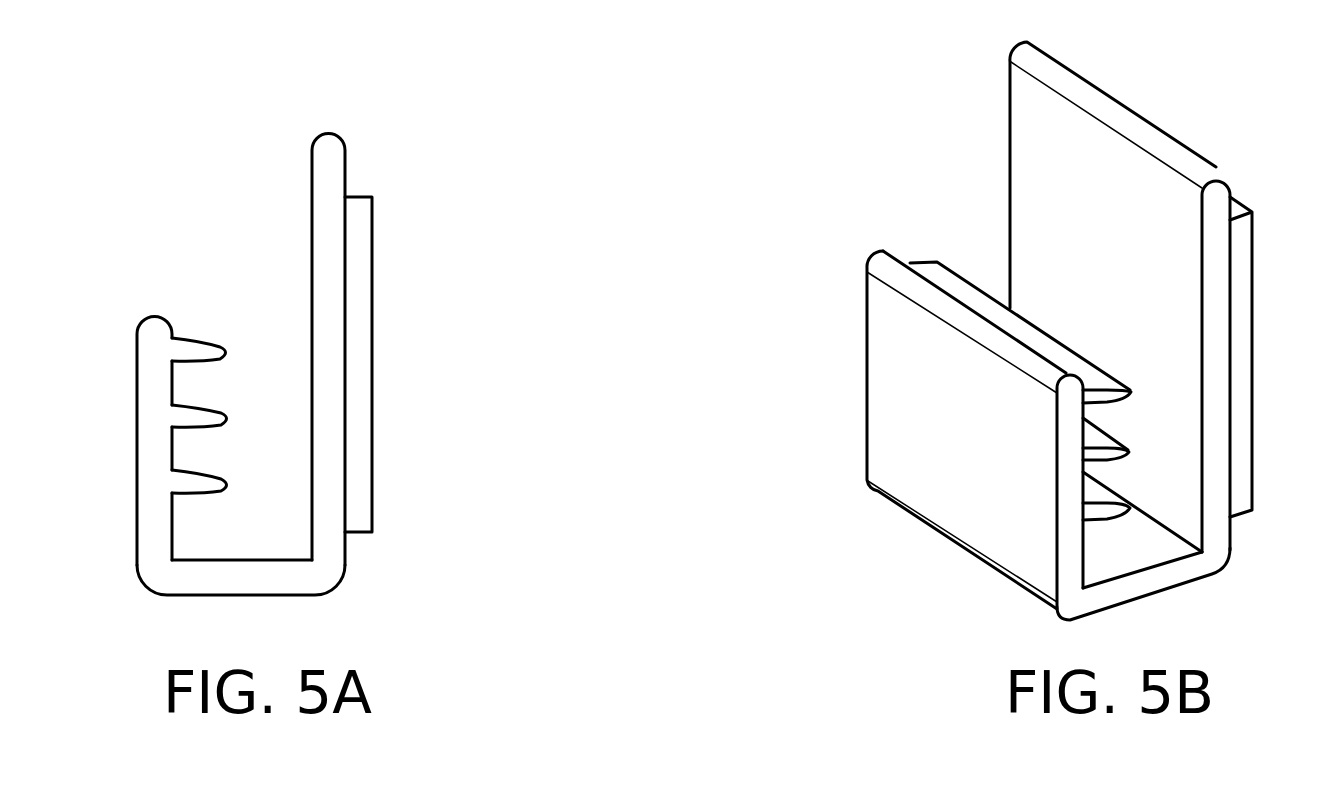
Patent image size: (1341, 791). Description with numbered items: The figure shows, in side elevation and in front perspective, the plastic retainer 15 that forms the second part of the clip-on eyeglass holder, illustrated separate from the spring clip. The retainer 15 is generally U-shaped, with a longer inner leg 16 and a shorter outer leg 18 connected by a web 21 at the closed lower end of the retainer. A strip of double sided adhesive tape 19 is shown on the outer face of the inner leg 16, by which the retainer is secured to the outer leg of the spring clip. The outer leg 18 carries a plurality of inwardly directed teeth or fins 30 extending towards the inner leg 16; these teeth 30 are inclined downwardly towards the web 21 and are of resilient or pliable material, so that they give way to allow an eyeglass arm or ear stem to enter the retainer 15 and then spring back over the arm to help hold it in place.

In FIG. 5A, the retainer 15 is at (96, 346).
In FIG. 5B, the retainer 15 is at (861, 537).
In FIG. 5A, the inner leg 16 is at (312, 237).
In FIG. 5B, the inner leg 16 is at (1214, 282).
In FIG. 5A, the outer leg 18 is at (137, 443).
In FIG. 5B, the outer leg 18 is at (905, 377).
In FIG. 5A, the double sided adhesive tape 19 is at (358, 380).
In FIG. 5B, the double sided adhesive tape 19 is at (1242, 365).
In FIG. 5A, the web 21 is at (232, 578).
In FIG. 5B, the web 21 is at (1157, 583).
In FIG. 5A, the teeth 30 is at (220, 404).
In FIG. 5B, the teeth 30 is at (1108, 364).